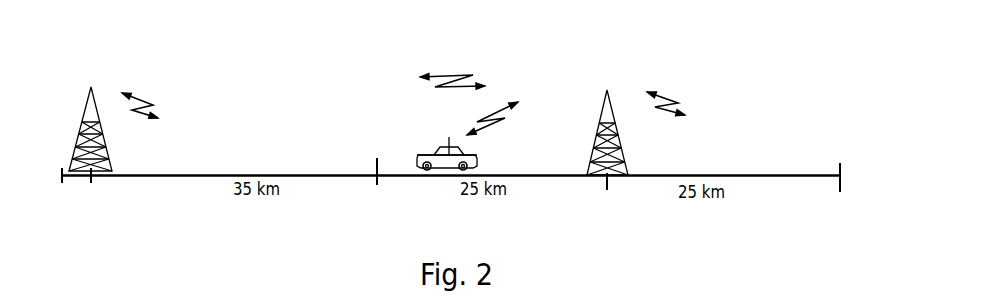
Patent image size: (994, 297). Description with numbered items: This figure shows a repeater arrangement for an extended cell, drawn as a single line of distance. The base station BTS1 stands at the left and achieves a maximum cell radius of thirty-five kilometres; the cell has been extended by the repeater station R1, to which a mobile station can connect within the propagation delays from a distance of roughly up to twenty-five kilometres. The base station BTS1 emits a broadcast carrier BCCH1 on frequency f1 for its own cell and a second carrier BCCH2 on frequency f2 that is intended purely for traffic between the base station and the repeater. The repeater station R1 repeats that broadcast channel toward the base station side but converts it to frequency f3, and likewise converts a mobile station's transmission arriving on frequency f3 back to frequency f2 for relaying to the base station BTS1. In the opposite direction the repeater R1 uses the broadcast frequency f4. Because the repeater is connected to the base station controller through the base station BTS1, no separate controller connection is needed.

The base station BTS1 is at (89, 151).
The repeater station R1 is at (607, 152).
The frequency f1 is at (152, 115).
The frequency f2 is at (452, 67).
The frequency f3 is at (497, 125).
The frequency f4 is at (677, 115).